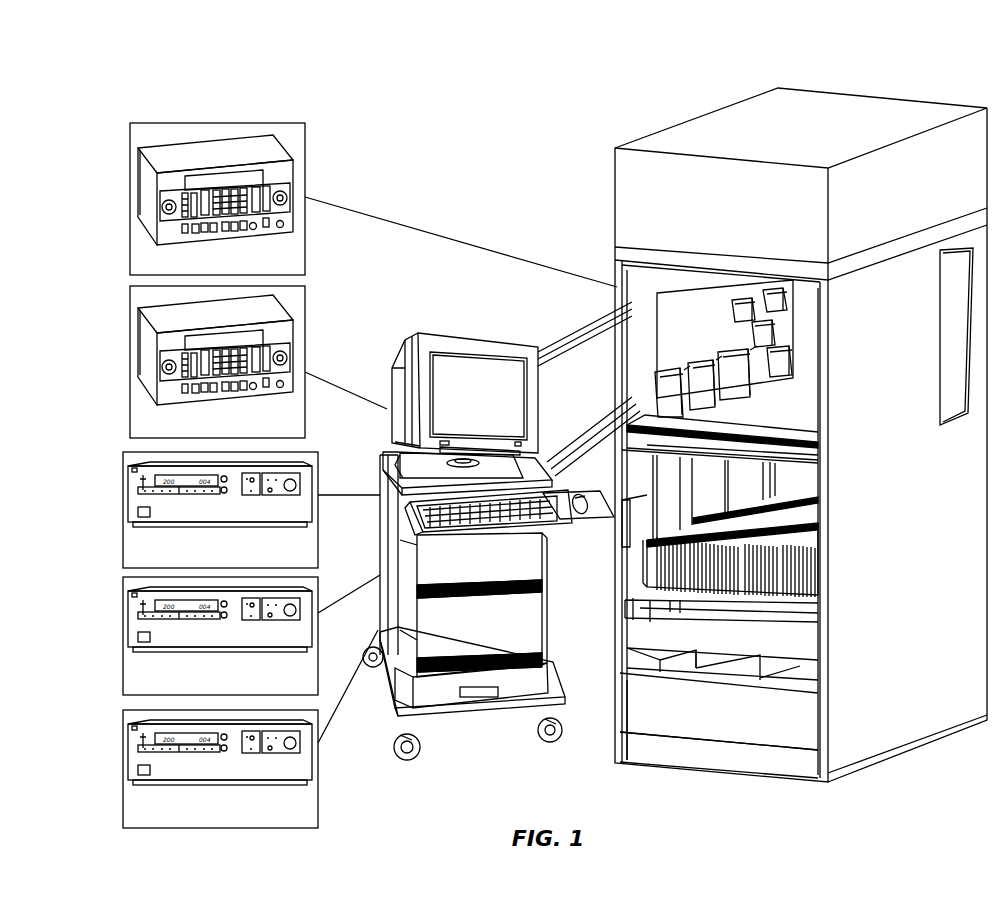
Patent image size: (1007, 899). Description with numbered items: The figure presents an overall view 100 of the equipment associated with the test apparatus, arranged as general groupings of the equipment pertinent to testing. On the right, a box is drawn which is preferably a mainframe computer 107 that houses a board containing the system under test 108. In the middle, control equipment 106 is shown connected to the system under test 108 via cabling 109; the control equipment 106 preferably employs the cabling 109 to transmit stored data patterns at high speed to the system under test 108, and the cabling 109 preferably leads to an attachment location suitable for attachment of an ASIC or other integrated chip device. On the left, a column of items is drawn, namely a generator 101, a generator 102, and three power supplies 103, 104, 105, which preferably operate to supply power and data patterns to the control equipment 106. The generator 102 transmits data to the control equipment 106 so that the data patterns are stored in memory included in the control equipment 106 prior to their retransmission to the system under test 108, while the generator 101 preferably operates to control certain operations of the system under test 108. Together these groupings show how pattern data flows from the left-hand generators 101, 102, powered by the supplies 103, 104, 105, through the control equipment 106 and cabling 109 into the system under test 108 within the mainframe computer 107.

The overall view 100 is at (576, 78).
The generator 101 is at (130, 152).
The generator 102 is at (130, 318).
The power supply 103 is at (122, 490).
The power supply 104 is at (122, 632).
The power supply 105 is at (122, 752).
The control equipment 106 is at (403, 328).
The mainframe computer 107 is at (827, 93).
The system under test 108 is at (740, 397).
The cabling 109 is at (590, 320).